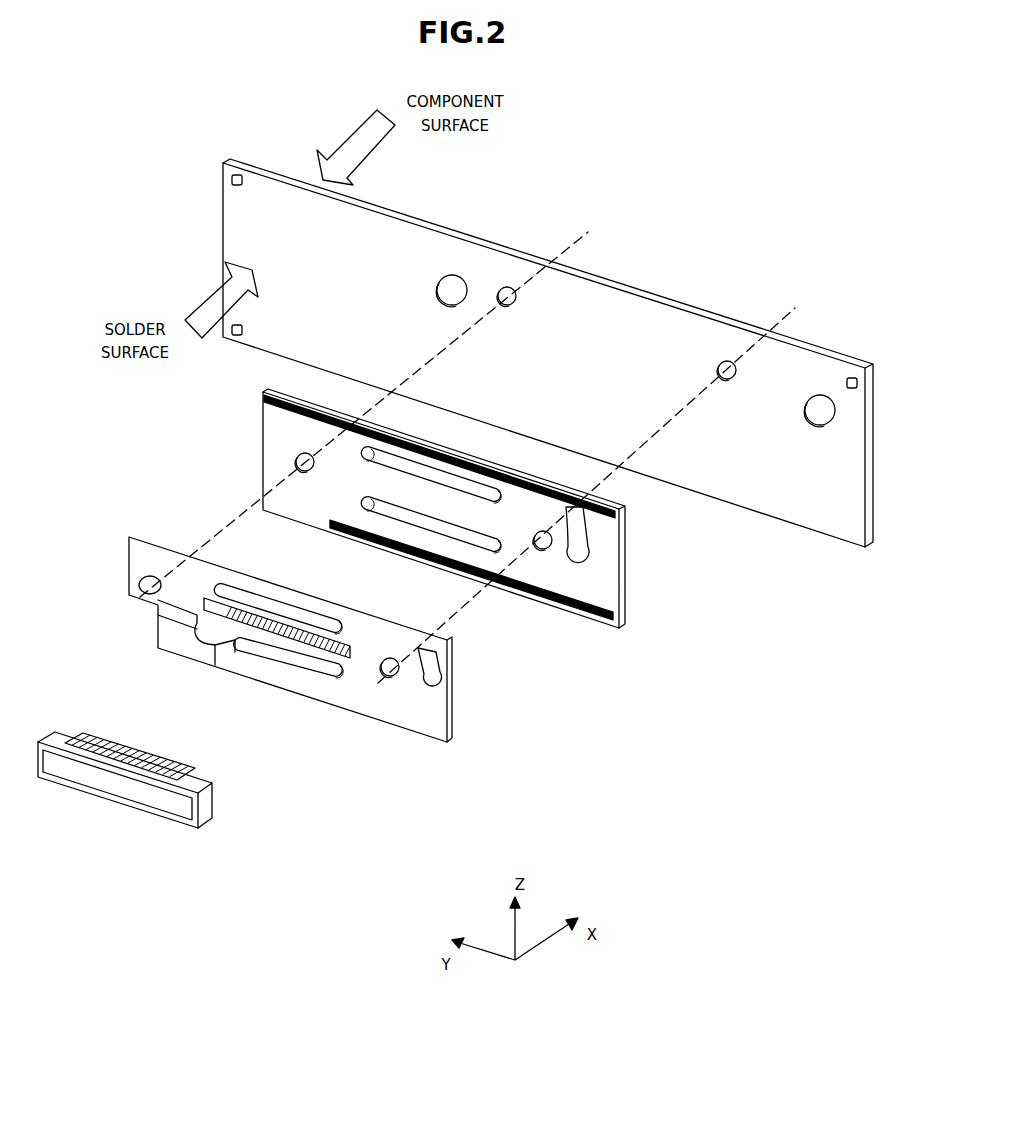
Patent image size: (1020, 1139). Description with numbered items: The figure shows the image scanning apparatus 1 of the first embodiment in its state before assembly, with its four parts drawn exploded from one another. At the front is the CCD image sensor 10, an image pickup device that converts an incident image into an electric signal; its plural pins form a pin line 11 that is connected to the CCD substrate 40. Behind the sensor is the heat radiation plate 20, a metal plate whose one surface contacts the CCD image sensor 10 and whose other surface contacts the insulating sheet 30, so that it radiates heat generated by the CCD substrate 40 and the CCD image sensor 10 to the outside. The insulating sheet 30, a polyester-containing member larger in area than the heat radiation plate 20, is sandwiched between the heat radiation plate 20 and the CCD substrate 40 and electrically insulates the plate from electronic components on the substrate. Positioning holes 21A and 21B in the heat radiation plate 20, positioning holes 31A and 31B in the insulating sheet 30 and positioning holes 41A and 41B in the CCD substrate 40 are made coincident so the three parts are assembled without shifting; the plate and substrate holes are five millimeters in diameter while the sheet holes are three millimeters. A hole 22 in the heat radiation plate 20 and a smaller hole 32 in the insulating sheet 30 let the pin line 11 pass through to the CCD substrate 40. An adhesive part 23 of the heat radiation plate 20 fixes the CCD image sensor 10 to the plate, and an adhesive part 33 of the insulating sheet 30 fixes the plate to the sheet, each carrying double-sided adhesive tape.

The image scanning apparatus 1 is at (778, 175).
The CCD image sensor 10 is at (197, 830).
The pin line 11 is at (183, 760).
The heat radiation plate 20 is at (457, 733).
The positioning hole 21A is at (137, 595).
The positioning hole 21B is at (381, 672).
The hole 22 is at (238, 595).
The adhesive part 23 is at (354, 648).
The insulating sheet 30 is at (623, 613).
The positioning hole 31A is at (297, 460).
The positioning hole 31B is at (538, 553).
The hole 32 is at (445, 478).
The adhesive part 33 is at (621, 509).
The CCD substrate 40 is at (787, 518).
The positioning hole 41A is at (506, 287).
The positioning hole 41B is at (727, 361).